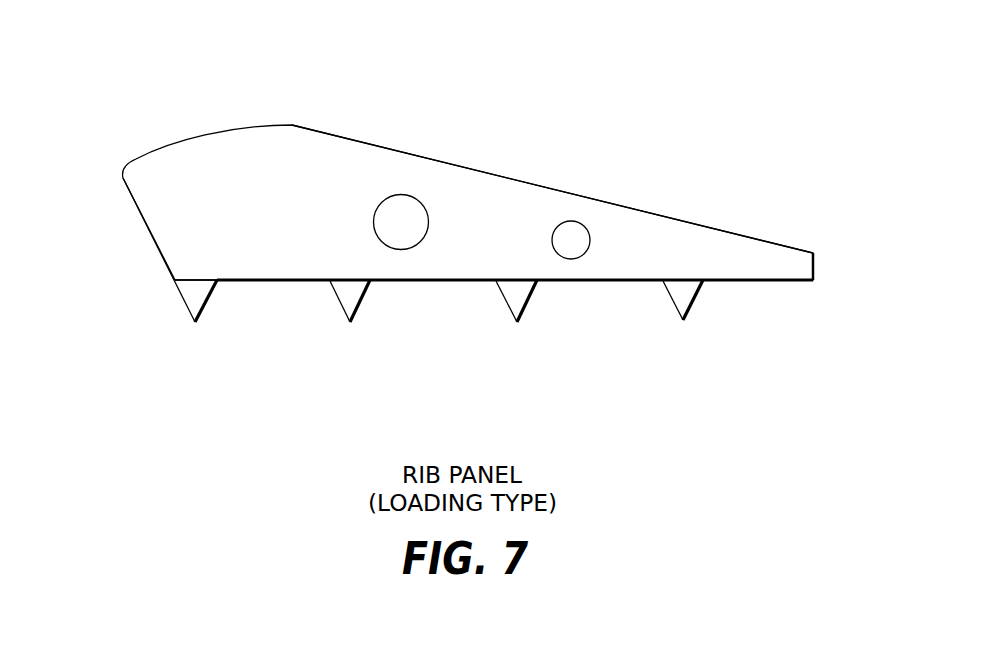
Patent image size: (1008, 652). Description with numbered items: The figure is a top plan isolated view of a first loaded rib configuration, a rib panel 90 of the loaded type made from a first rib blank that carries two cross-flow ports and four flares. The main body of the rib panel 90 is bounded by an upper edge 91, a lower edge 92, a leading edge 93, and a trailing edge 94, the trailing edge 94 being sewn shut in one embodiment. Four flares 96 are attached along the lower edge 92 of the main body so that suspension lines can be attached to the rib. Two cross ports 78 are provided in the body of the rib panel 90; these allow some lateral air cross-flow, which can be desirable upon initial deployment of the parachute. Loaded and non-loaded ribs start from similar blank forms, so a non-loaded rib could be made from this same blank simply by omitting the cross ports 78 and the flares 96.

The rib panel 90 is at (399, 76).
The upper edge 91 is at (510, 178).
The lower edge 92 is at (430, 281).
The leading edge 93 is at (152, 240).
The trailing edge 94 is at (813, 263).
The cross ports 78 is at (578, 247).
The flares 96 is at (688, 293).